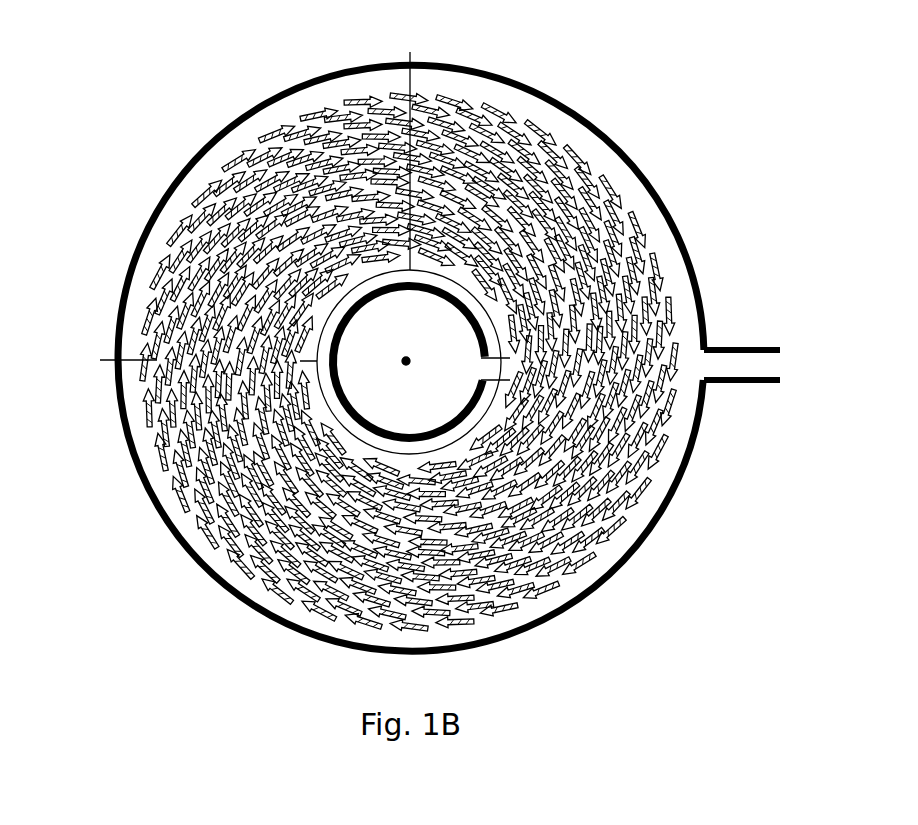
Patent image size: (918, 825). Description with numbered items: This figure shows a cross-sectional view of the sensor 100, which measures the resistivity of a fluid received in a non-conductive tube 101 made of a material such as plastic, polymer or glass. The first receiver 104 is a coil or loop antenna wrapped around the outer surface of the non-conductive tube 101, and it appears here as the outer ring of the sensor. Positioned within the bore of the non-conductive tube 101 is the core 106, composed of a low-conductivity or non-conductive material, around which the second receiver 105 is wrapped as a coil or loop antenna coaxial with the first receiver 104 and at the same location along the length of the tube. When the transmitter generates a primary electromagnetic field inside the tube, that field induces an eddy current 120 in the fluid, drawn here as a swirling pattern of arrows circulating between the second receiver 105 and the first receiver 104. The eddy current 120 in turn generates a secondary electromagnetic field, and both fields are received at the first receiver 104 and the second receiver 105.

The sensor 100 is at (434, 351).
The non-conductive tube 101 is at (683, 308).
The first receiver 104 is at (388, 356).
The second receiver 105 is at (447, 292).
The core 106 is at (375, 395).
The eddy current 120 is at (585, 448).